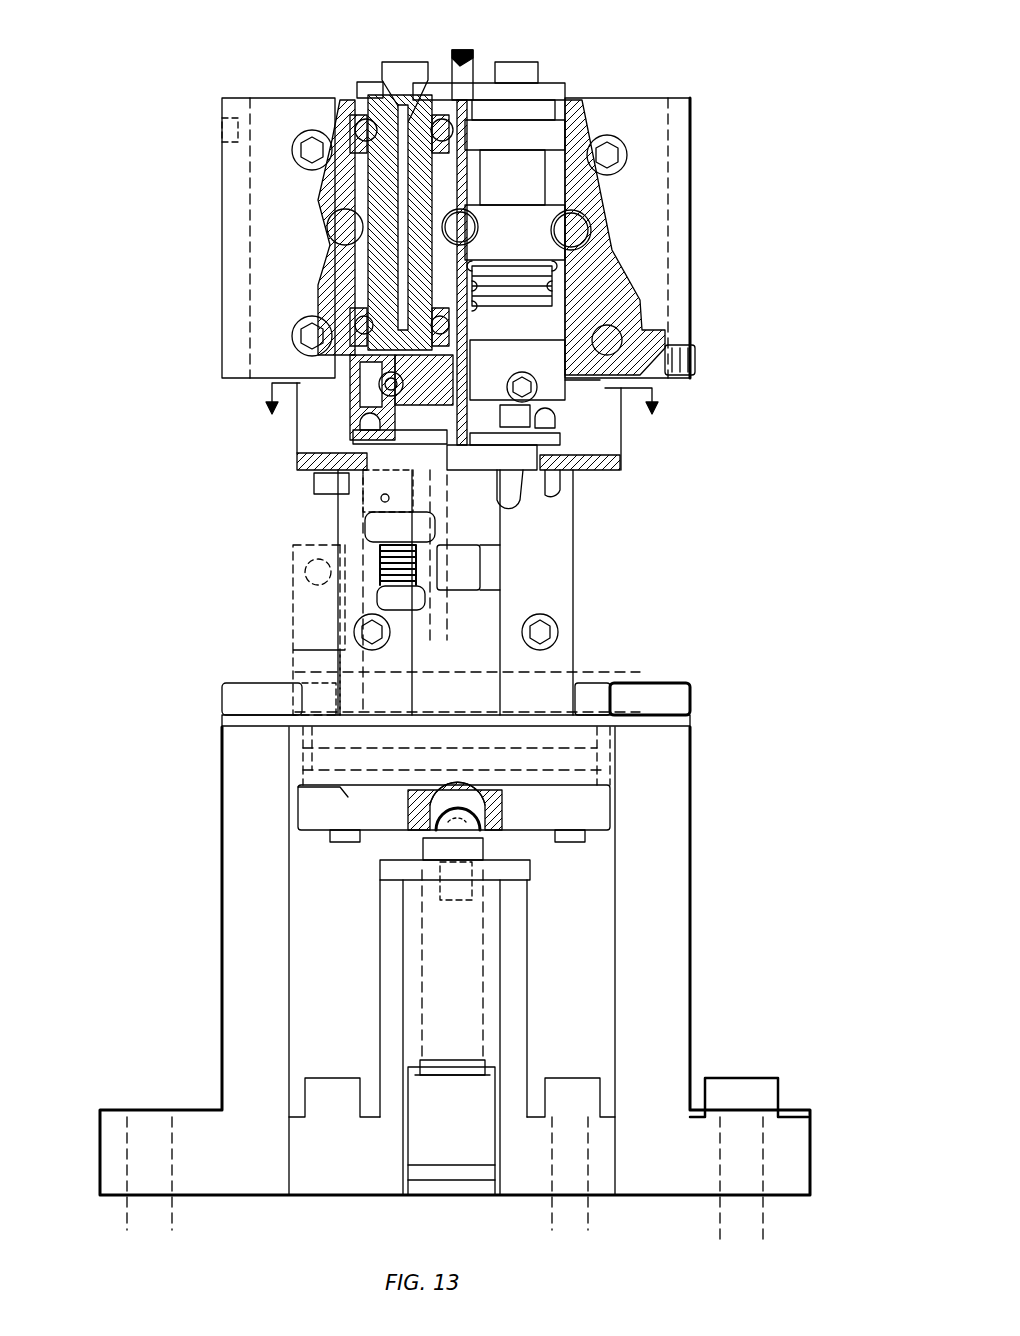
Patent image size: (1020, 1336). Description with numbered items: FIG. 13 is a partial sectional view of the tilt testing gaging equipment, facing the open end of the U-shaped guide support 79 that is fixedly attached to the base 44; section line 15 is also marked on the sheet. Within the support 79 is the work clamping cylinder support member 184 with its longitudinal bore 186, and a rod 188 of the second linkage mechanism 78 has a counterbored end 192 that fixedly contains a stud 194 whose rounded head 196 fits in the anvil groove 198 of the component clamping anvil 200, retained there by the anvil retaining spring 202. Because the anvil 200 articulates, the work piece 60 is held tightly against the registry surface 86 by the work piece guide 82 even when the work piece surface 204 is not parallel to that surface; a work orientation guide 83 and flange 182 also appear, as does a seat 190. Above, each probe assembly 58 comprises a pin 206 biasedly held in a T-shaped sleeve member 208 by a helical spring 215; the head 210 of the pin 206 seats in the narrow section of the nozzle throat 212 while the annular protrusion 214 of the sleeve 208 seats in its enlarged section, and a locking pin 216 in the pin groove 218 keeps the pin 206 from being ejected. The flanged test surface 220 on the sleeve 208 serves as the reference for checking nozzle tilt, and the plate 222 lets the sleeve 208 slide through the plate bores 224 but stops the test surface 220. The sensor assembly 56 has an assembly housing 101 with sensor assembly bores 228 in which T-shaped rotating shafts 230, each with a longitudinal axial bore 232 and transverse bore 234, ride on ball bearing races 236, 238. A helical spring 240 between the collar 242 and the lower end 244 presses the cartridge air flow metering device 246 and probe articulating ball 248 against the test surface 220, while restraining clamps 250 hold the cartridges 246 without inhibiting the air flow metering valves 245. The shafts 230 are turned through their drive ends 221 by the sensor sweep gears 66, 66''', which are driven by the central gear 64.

The base 44 is at (790, 1165).
The sensor assembly 56 is at (215, 200).
The probe assembly 58 is at (348, 485).
The work piece 60 is at (295, 662).
The central gear 64 is at (470, 86).
The sensor sweep gear 66 is at (326, 79).
The sensor sweep gear 66''' is at (524, 79).
The second linkage mechanism 78 is at (428, 1128).
The U-shaped guide support 79 is at (240, 1040).
The work piece guide 82 is at (692, 722).
The work orientation guide 83 is at (482, 578).
The registry surface 86 is at (672, 740).
The assembly housing 101 is at (282, 140).
The section line 15 is at (459, 426).
The flange 182 is at (665, 705).
The work clamping cylinder support member 184 is at (388, 995).
The longitudinal bore 186 is at (422, 942).
The rod 188 is at (440, 908).
The seat 190 is at (440, 1075).
The counterbored end 192 is at (460, 846).
The stud 194 is at (468, 890).
The rounded head 196 is at (492, 842).
The anvil groove 198 is at (503, 805).
The component clamping anvil 200 is at (612, 825).
The anvil retaining spring 202 is at (482, 840).
The work piece surface 204 is at (346, 796).
The pin 206 is at (376, 580).
The T-shaped sleeve member 208 is at (428, 520).
The head 210 is at (392, 598).
The nozzle throat 212 is at (380, 565).
The annular protrusion 214 is at (376, 530).
The helical spring 215 is at (482, 560).
The locking pin 216 is at (400, 472).
The pin groove 218 is at (392, 488).
The flanged test surface 220 is at (612, 462).
The shaft drive end 221 is at (410, 70).
The plate 222 is at (598, 482).
The plate bore 224 is at (458, 455).
The sensor assembly bore 228 is at (355, 180).
The T-shaped rotating shaft 230 is at (542, 76).
The longitudinal axial bore 232 is at (440, 152).
The transverse bore 234 is at (490, 340).
The ball bearing race 236 is at (355, 122).
The ball bearing race 238 is at (352, 330).
The helical spring 240 is at (608, 270).
The collar 242 is at (545, 255).
The lower end 244 is at (668, 352).
The air flow metering valve 245 is at (362, 428).
The cartridge air flow metering device 246 is at (347, 415).
The probe articulating ball 248 is at (540, 437).
The restraining clamp 250 is at (600, 390).